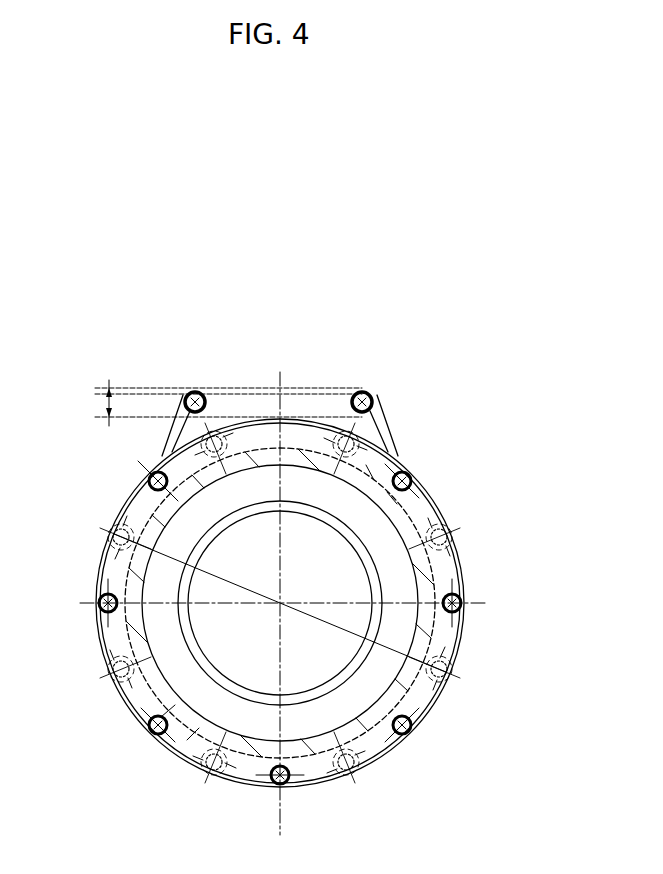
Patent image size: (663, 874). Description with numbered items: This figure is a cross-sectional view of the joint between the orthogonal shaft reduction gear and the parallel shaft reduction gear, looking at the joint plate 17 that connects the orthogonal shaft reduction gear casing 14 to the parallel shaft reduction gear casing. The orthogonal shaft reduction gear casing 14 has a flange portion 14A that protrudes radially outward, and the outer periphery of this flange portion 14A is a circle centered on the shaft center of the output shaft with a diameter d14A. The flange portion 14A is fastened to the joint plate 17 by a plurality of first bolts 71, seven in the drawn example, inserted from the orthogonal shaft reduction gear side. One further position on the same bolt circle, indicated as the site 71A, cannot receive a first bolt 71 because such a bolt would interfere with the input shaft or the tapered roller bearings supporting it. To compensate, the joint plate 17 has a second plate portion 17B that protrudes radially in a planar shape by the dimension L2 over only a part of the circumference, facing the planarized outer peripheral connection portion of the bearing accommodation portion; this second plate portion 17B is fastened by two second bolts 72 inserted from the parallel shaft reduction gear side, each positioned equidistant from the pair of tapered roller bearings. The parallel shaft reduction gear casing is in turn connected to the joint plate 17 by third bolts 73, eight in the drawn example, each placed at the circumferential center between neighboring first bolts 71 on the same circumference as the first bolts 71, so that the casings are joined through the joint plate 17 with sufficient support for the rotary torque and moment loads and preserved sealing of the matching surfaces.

The orthogonal shaft reduction gear casing 14 is at (280, 603).
The flange portion 14A is at (458, 641).
The diameter of flange portion d14A is at (250, 572).
The joint plate 17 is at (295, 396).
The second plate portion 17B is at (305, 402).
The first bolt 71 is at (468, 598).
The site where a first bolt cannot be disposed 71A is at (277, 434).
The second bolt 72 is at (196, 391).
The third bolt 73 is at (110, 530).
The axial length of second plate portion L2 is at (107, 402).